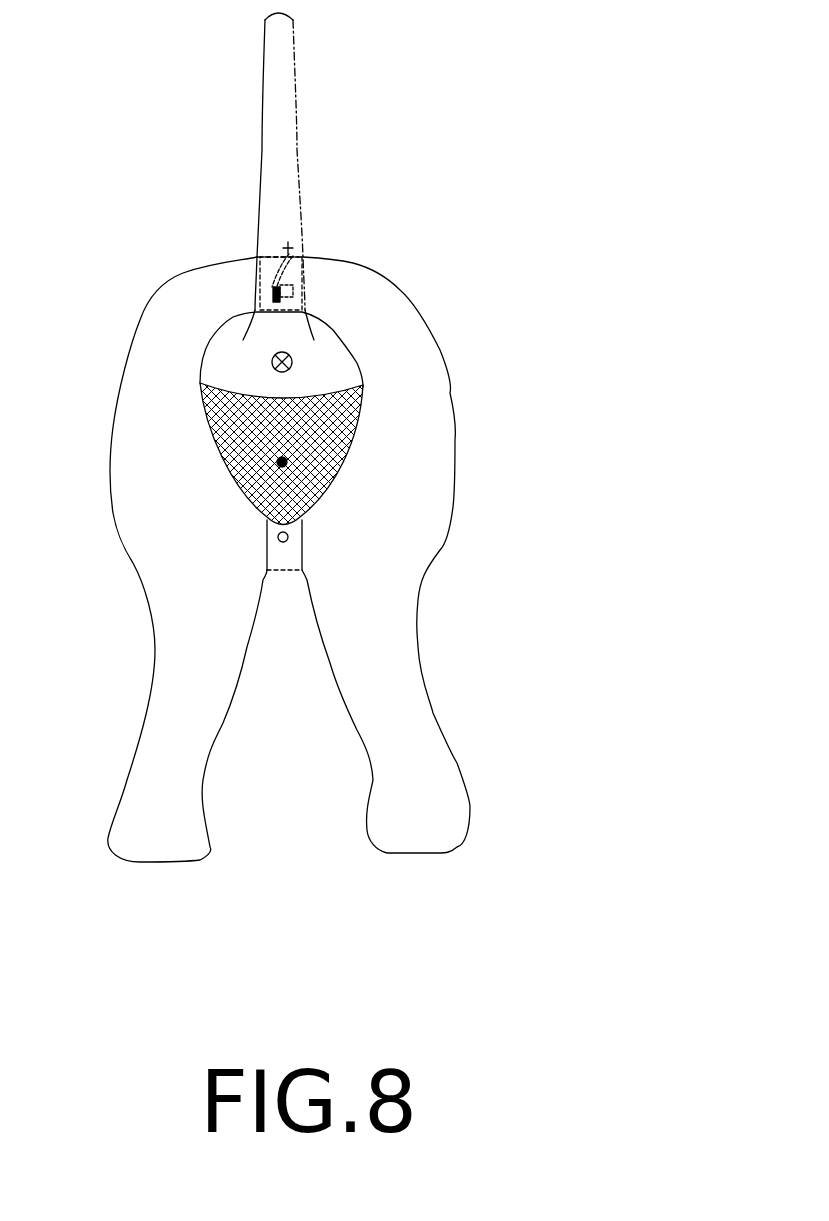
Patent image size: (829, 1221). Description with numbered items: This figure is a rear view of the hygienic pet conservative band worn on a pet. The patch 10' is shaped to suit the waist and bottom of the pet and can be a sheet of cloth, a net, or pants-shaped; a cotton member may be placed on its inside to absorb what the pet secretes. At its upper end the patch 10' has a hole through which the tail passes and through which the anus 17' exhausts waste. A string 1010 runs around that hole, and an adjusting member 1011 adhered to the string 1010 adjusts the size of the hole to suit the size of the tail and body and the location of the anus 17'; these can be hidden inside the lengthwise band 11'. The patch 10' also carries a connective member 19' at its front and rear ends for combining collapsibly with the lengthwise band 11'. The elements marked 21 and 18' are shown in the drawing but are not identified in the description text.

The tail 21 is at (285, 136).
The adjusting member 1011 is at (272, 290).
The lengthwise band 11' is at (400, 392).
The string 1010 is at (347, 333).
The connective member 19' is at (166, 399).
The anus 17' is at (166, 358).
The patch 10' is at (380, 436).
The button 18' is at (356, 465).